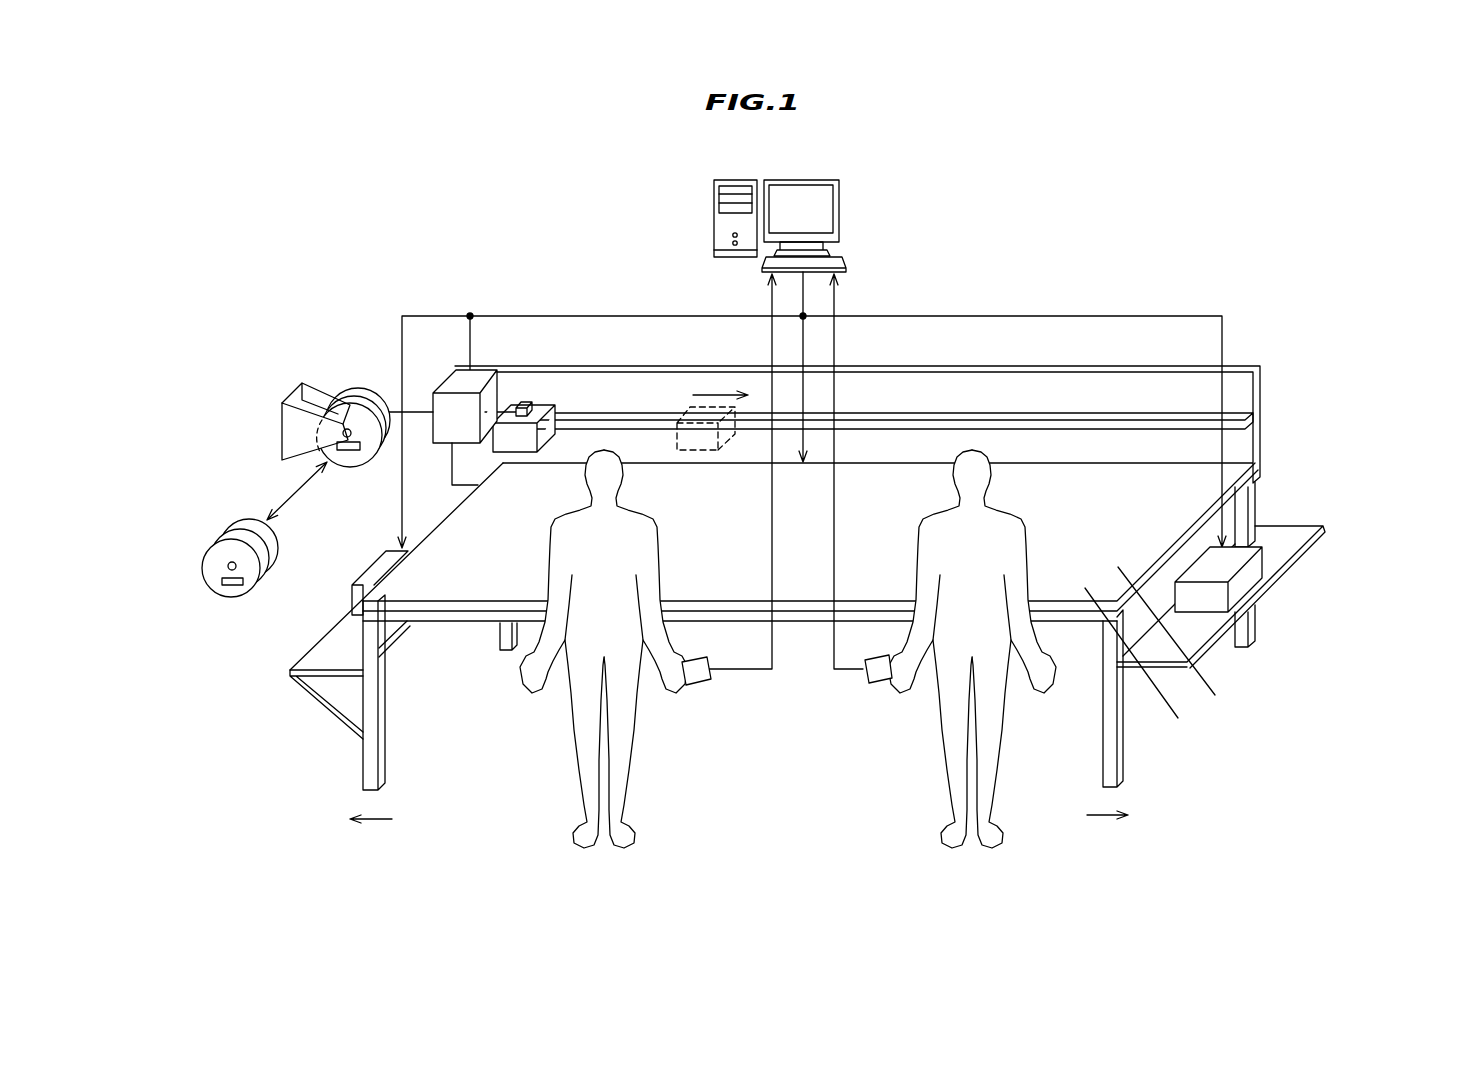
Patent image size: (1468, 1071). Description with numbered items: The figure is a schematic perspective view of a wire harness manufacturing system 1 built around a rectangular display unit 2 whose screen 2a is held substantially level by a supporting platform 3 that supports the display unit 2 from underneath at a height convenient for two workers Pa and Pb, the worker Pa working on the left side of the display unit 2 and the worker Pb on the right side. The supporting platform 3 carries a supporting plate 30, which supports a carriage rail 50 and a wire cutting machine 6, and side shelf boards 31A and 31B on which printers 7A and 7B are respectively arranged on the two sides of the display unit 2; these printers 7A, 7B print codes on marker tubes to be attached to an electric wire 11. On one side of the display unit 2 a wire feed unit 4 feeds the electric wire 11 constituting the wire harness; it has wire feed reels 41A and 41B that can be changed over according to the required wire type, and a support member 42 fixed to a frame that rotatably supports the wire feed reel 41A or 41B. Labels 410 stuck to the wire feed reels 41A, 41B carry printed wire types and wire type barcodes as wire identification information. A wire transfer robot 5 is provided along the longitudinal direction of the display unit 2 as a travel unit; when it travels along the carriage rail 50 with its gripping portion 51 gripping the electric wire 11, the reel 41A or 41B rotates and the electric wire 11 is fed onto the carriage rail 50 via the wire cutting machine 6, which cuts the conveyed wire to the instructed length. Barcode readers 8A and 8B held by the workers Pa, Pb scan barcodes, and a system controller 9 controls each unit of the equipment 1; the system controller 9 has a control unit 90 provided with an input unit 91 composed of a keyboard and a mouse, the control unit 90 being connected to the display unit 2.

The wire harness manufacturing system 1 is at (430, 185).
The system controller 9 is at (857, 161).
The input unit 91 is at (843, 212).
The control unit 90 is at (845, 258).
The wire cutting machine 6 is at (462, 378).
The electric wire 11 is at (415, 410).
The wire transfer robot 5 is at (522, 402).
The gripping portion 51 is at (524, 404).
The wire feed unit 4 is at (294, 363).
The wire feed reel 41A is at (340, 407).
The wire feed reel 41B is at (223, 555).
The support member 42 is at (290, 447).
The label 410 is at (352, 453).
The carriage rail 50 is at (1240, 415).
The supporting plate 30 is at (1248, 445).
The supporting platform 3 is at (1253, 510).
The printer 7A is at (375, 572).
The printer 7B is at (1247, 580).
The side shelf board 31A is at (338, 642).
The side shelf board 31B is at (1208, 632).
The display unit 2 is at (1232, 661).
The screen 2a is at (1188, 671).
The barcode reader 8A is at (698, 684).
The barcode reader 8B is at (882, 683).
The worker Pa is at (580, 703).
The worker Pb is at (955, 745).